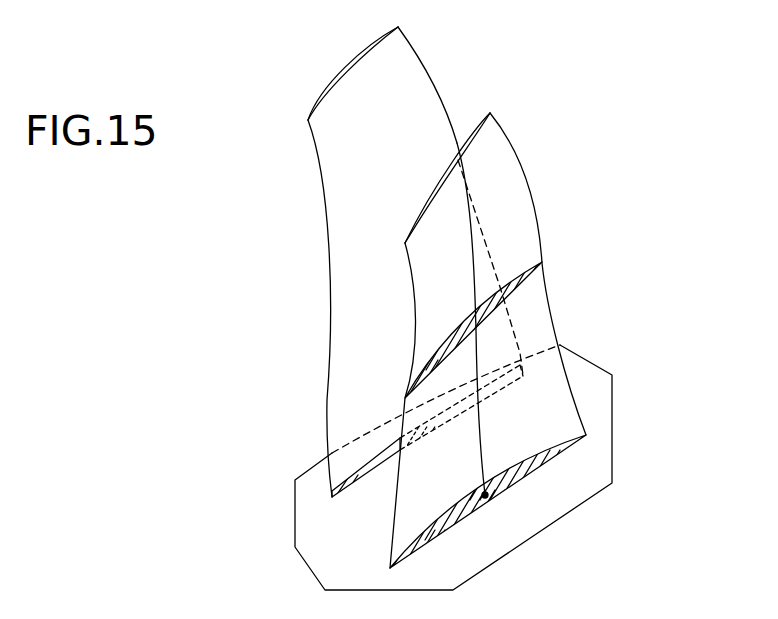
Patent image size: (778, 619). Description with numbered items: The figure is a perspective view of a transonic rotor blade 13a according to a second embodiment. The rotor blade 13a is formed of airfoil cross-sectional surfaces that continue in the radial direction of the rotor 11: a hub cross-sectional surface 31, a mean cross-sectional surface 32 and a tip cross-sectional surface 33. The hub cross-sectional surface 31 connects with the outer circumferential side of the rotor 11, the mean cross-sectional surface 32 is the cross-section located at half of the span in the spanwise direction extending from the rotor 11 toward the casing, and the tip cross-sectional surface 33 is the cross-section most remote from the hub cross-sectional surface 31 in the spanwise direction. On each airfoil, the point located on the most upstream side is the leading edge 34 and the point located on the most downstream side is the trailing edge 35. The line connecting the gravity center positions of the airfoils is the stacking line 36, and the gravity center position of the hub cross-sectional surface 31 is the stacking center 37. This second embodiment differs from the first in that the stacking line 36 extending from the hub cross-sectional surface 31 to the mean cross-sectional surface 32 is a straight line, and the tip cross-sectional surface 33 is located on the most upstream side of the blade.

The rotor 11 is at (312, 523).
The rotor blade 13a is at (478, 349).
The hub cross-sectional surface 31 is at (445, 530).
The mean cross-sectional surface 32 is at (523, 287).
The tip cross-sectional surface 33 is at (408, 230).
The leading edge 34 is at (400, 433).
The trailing edge 35 is at (537, 212).
The stacking line 36 is at (483, 447).
The stacking center 37 is at (485, 495).